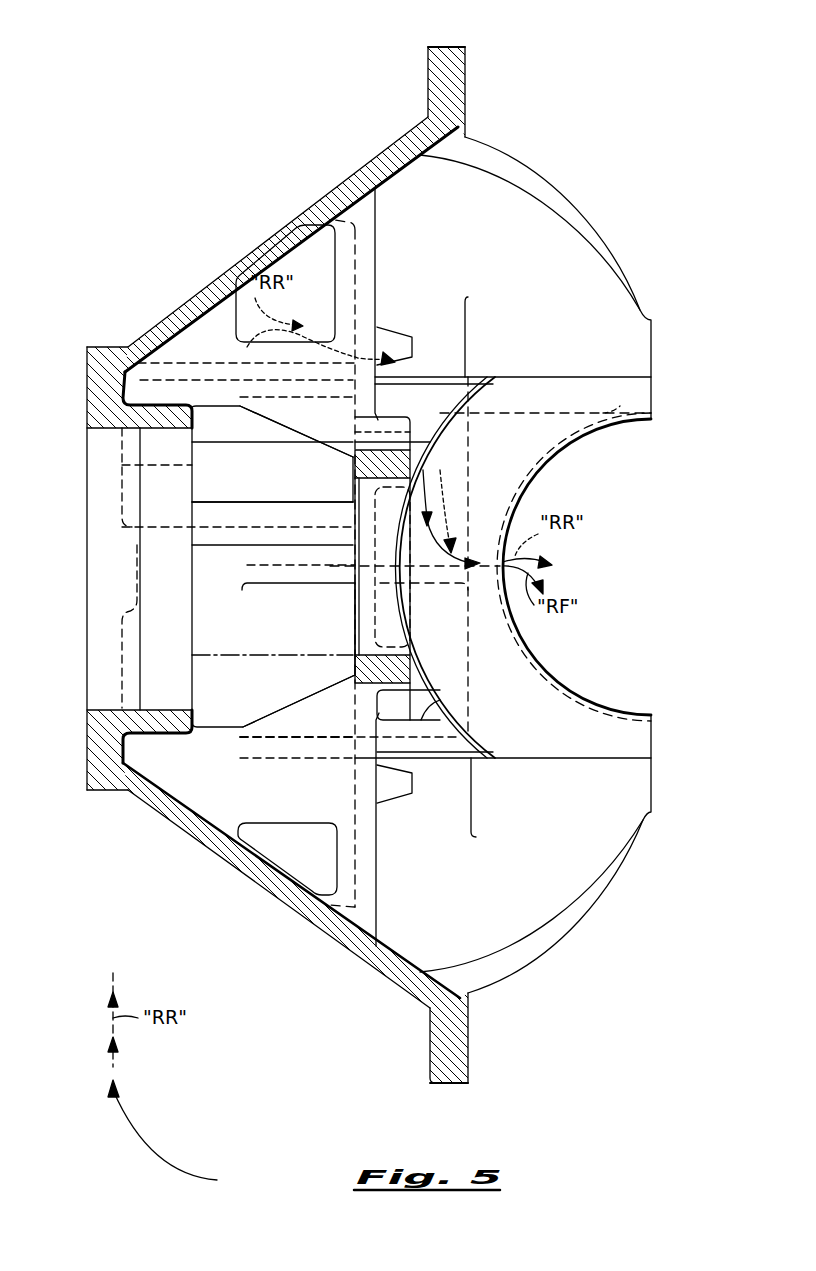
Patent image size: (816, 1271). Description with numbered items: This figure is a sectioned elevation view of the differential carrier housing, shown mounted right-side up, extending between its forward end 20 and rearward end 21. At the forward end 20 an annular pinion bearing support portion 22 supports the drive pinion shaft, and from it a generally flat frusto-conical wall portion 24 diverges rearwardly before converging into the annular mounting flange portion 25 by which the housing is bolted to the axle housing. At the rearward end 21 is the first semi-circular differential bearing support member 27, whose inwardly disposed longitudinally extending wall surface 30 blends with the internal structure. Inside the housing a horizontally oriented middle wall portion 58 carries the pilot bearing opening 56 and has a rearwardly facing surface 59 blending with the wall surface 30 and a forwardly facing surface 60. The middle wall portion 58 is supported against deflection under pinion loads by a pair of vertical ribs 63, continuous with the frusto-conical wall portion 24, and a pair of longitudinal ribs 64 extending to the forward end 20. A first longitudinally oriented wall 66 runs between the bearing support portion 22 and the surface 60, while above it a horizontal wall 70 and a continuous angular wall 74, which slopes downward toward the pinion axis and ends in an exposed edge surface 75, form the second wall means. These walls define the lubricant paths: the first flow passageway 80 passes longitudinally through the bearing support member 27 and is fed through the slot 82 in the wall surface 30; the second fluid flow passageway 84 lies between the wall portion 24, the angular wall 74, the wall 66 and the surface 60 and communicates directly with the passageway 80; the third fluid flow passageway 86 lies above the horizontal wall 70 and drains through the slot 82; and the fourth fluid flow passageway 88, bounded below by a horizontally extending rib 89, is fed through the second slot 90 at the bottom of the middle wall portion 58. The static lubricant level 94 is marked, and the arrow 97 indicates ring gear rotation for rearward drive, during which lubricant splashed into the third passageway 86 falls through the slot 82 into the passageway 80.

The forward end 20 is at (106, 345).
The rearward end 21 is at (655, 727).
The annular pinion bearing support portion 22 is at (97, 430).
The frusto-conical wall portion 24 is at (262, 250).
The annular mounting flange portion 25 is at (463, 46).
The first semi-circular differential bearing support member 27 is at (542, 668).
The inwardly disposed longitudinally extending wall surface 30 is at (508, 474).
The pilot bearing opening 56 is at (368, 652).
The middle wall portion 58 is at (385, 418).
The rearwardly facing surface 59 is at (412, 432).
The forwardly facing surface 60 is at (352, 432).
The vertical ribs 63 is at (376, 246).
The longitudinal ribs 64 is at (243, 418).
The first longitudinally orientated wall 66 is at (234, 502).
The horizontally orientated wall 70 is at (220, 362).
The angular wall 74 is at (207, 427).
The longitudinally extending edge surface 75 is at (289, 443).
The first flow passageway 80 is at (487, 502).
The slot 82 is at (440, 468).
The second fluid flow passageway 84 is at (300, 494).
The third fluid flow passageway 86 is at (320, 276).
The fourth fluid flow passageway 88 is at (283, 614).
The horizontally extending rib 89 is at (285, 737).
The second slot 90 is at (440, 694).
The static lubricant level 94 is at (210, 655).
The arrow 97 is at (205, 1180).